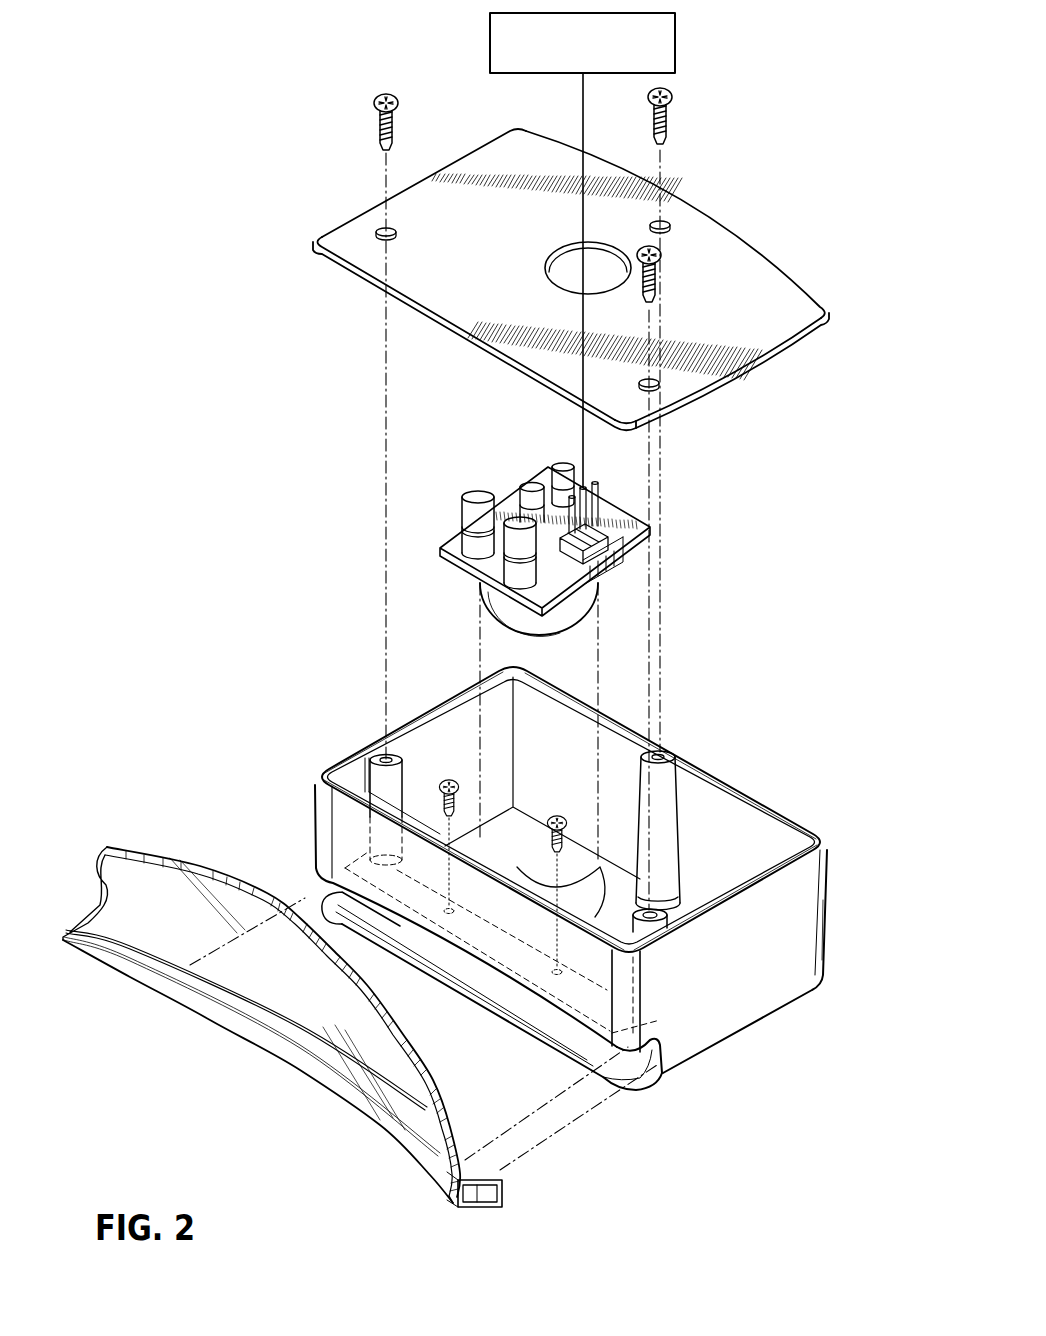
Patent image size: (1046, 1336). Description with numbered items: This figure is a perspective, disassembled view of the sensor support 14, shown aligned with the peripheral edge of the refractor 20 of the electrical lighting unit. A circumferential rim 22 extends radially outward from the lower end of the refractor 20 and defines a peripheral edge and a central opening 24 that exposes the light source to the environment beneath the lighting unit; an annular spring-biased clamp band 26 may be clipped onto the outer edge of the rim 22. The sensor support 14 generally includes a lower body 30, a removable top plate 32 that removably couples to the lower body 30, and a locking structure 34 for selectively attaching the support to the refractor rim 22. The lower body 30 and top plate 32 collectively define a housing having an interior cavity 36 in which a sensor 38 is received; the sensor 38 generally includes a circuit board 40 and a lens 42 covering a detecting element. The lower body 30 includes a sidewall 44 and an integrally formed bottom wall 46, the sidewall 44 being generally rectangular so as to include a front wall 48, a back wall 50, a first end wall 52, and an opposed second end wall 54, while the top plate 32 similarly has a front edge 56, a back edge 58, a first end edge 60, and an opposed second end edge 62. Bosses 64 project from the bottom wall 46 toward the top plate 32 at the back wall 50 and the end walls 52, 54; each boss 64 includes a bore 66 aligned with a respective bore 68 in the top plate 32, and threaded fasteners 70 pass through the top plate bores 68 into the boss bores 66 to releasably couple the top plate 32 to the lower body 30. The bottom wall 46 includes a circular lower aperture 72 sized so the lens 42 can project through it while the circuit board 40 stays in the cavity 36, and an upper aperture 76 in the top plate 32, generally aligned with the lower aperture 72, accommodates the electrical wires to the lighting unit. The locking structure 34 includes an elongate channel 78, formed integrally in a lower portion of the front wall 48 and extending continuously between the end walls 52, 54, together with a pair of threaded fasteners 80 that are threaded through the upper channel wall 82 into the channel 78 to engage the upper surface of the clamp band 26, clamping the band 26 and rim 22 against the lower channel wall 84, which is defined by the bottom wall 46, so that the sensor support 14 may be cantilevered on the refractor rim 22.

The sensor support 14 is at (470, 627).
The refractor 20 is at (359, 1044).
The circumferential rim 22 is at (477, 1197).
The central opening 24 is at (258, 1025).
The clamp band 26 is at (504, 1192).
The lower body 30 is at (570, 877).
The top plate 32 is at (571, 279).
The locking structure 34 is at (332, 893).
The interior cavity 36 is at (736, 848).
The sensor 38 is at (529, 650).
The circuit board 40 is at (480, 563).
The lens 42 is at (543, 632).
The sidewall 44 is at (829, 897).
The bottom wall 46 is at (554, 856).
The front wall 48 is at (352, 826).
The back wall 50 is at (563, 707).
The first end wall 52 is at (440, 707).
The second end wall 54 is at (718, 1008).
The front edge 56 is at (482, 338).
The back edge 58 is at (790, 288).
The first end edge 60 is at (366, 215).
The second end edge 62 is at (753, 364).
The bosses 64 is at (524, 839).
The bore 66 is at (383, 756).
The bore 68 is at (398, 232).
The threaded fasteners 70 is at (374, 116).
The lower aperture 72 is at (576, 886).
The upper aperture 76 is at (546, 262).
The channel 78 is at (473, 962).
The threaded fasteners 80 is at (449, 776).
The upper channel wall 82 is at (515, 978).
The lower channel wall 84 is at (492, 994).